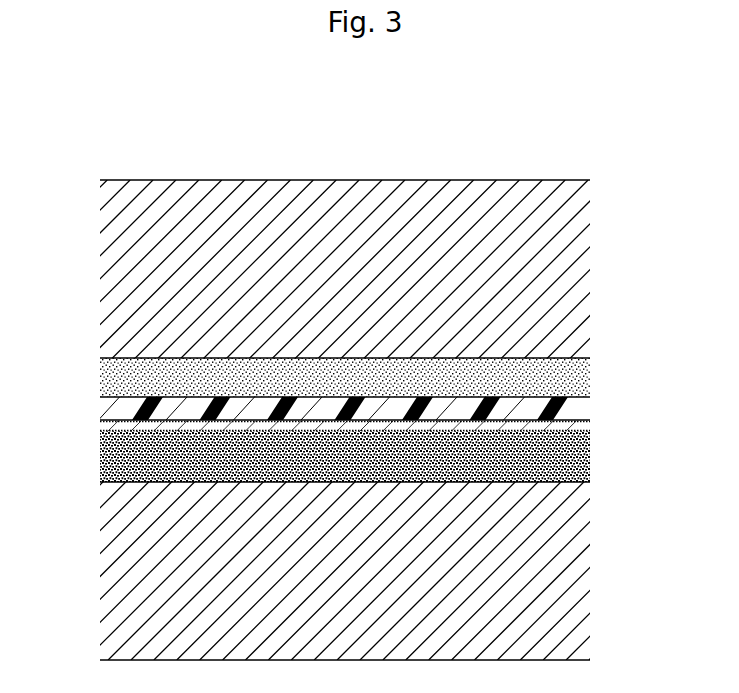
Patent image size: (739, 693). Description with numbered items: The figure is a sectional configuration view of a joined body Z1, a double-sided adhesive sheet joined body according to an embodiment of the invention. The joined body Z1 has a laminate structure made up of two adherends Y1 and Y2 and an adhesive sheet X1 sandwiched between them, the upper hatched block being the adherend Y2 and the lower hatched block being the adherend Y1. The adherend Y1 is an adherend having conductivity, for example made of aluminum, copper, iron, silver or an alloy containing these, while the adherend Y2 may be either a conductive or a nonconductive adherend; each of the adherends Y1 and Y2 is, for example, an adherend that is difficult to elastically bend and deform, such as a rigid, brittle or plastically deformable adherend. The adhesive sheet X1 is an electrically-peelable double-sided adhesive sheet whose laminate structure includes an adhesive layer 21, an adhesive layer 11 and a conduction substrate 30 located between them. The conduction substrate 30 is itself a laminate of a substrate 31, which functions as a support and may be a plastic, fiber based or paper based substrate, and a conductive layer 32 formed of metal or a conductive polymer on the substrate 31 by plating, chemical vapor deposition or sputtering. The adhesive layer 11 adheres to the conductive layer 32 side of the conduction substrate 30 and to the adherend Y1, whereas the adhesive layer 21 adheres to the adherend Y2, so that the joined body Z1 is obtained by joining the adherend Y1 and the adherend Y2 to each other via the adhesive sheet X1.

The joined body Z1 is at (473, 164).
The adherend Y2 is at (110, 266).
The adherend Y1 is at (110, 565).
The adhesive sheet X1 is at (96, 358).
The adhesive layer 21 is at (592, 364).
The conduction substrate 30 is at (660, 368).
The substrate 31 is at (592, 405).
The conductive layer 32 is at (590, 427).
The adhesive layer 11 is at (592, 455).